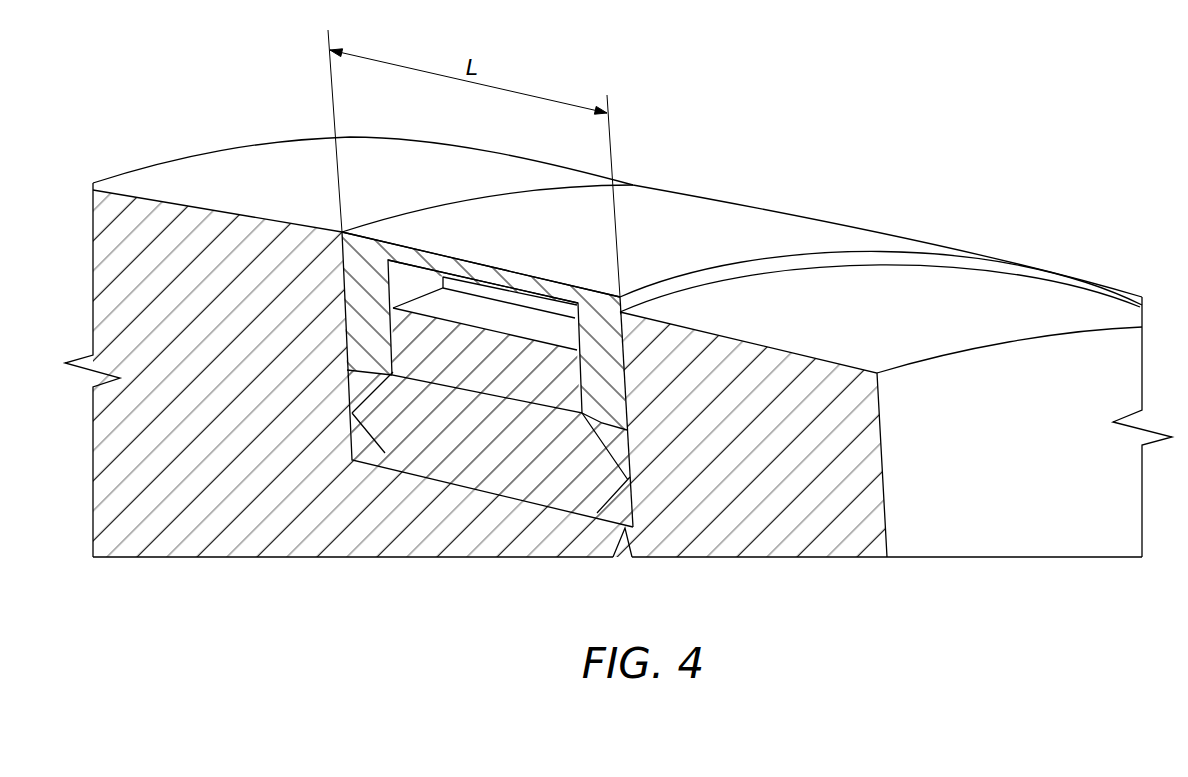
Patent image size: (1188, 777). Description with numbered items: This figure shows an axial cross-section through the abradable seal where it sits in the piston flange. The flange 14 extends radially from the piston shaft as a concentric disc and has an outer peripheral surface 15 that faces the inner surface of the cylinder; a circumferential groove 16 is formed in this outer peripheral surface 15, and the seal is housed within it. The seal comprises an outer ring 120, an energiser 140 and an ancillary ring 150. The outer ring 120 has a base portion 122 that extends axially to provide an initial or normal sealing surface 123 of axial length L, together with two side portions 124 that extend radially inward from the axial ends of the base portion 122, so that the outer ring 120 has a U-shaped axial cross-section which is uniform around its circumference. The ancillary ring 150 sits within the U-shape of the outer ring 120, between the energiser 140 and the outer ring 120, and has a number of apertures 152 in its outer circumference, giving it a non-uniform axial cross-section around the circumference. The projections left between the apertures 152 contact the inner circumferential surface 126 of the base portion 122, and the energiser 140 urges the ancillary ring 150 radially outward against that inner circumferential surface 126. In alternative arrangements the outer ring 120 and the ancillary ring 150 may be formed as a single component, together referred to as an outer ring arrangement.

The flange 14 is at (797, 540).
The outer peripheral surface 15 is at (938, 283).
The circumferential groove 16 is at (620, 518).
The outer ring 120 is at (484, 315).
The base portion 122 is at (510, 265).
The sealing surface 123 is at (705, 213).
The side portions 124 is at (358, 326).
The inner circumferential surface 126 is at (540, 297).
The energiser 140 is at (425, 452).
The ancillary ring 150 is at (486, 393).
The apertures 152 is at (430, 303).